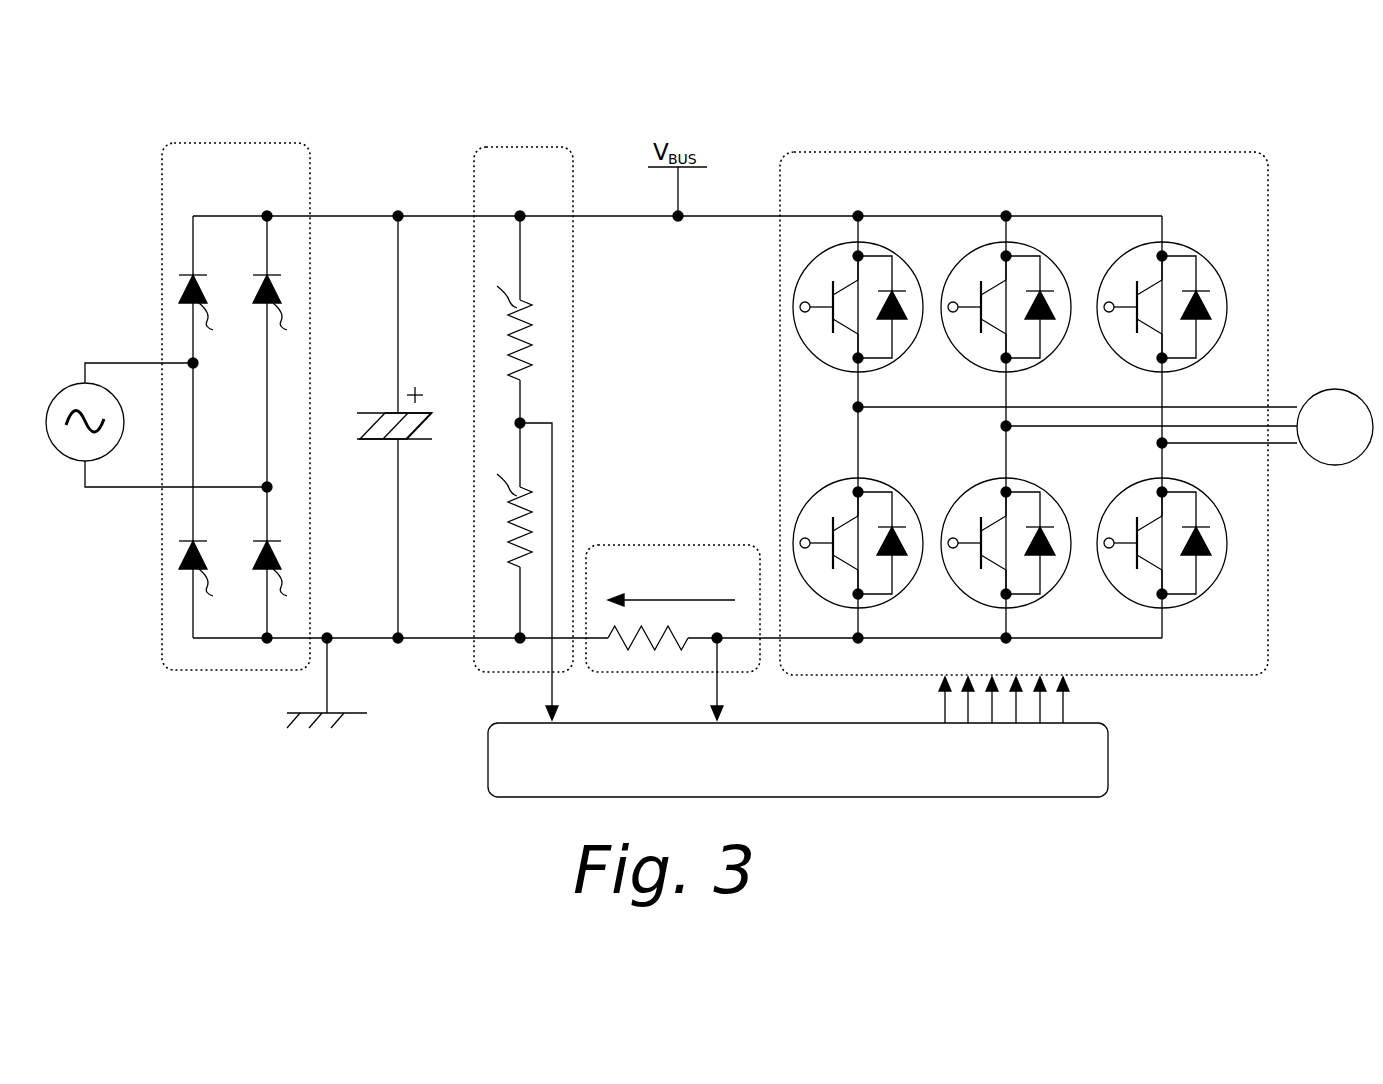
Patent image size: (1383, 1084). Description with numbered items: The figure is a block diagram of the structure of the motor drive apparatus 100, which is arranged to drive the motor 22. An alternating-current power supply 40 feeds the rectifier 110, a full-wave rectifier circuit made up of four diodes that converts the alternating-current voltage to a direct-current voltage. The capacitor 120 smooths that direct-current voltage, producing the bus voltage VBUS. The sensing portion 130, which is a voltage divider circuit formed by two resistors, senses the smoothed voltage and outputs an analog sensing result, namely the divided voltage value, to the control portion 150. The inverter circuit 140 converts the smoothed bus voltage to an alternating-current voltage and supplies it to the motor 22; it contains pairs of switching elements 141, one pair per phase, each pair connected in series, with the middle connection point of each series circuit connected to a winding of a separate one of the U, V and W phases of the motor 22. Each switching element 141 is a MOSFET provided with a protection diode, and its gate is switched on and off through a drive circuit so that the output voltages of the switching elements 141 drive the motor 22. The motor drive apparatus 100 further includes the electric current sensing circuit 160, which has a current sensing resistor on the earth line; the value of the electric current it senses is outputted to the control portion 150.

The motor drive apparatus 100 is at (1158, 71).
The rectifier 110 is at (283, 143).
The capacitor 120 is at (392, 413).
The sensing portion 130 is at (518, 147).
The inverter circuit 140 is at (1038, 387).
The switching element 141 is at (908, 271).
The control portion 150 is at (1068, 797).
The electric current sensing circuit 160 is at (710, 545).
The alternating-current power supply 40 is at (75, 385).
The motor 22 is at (1335, 389).